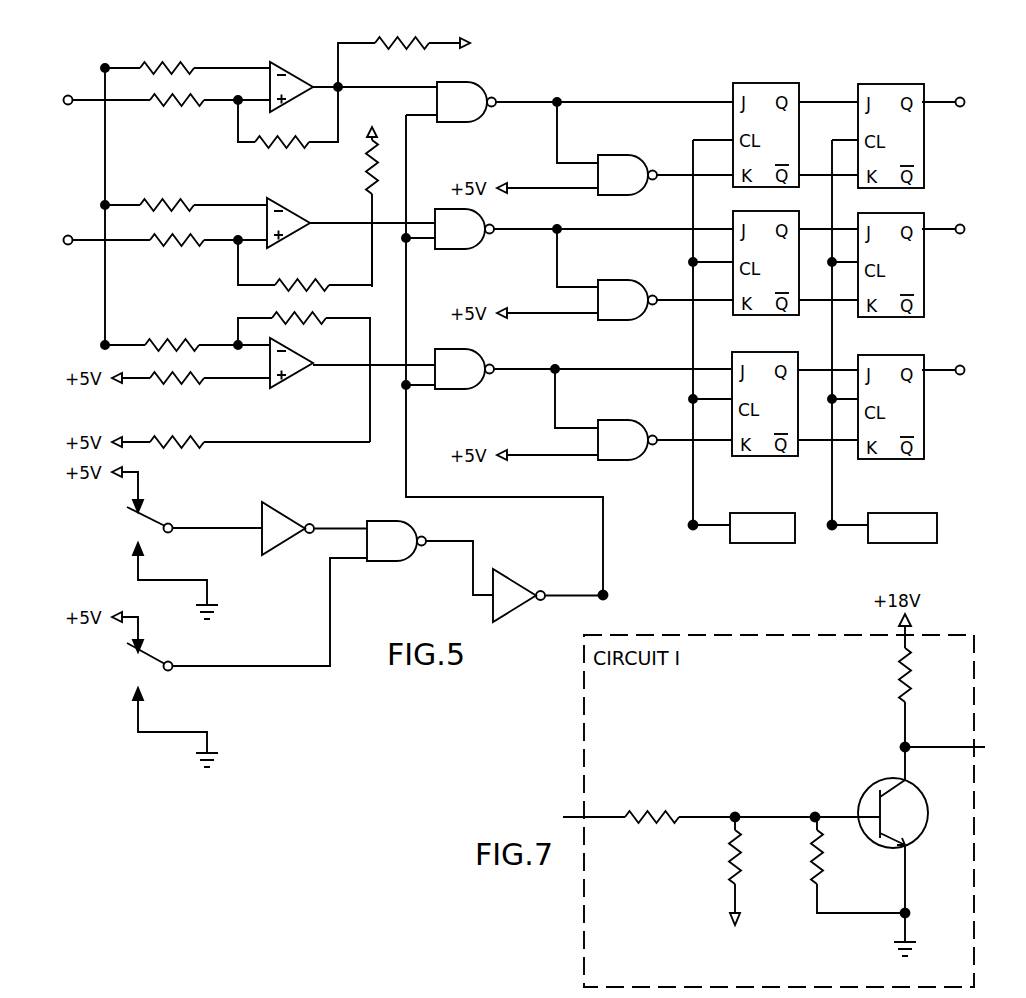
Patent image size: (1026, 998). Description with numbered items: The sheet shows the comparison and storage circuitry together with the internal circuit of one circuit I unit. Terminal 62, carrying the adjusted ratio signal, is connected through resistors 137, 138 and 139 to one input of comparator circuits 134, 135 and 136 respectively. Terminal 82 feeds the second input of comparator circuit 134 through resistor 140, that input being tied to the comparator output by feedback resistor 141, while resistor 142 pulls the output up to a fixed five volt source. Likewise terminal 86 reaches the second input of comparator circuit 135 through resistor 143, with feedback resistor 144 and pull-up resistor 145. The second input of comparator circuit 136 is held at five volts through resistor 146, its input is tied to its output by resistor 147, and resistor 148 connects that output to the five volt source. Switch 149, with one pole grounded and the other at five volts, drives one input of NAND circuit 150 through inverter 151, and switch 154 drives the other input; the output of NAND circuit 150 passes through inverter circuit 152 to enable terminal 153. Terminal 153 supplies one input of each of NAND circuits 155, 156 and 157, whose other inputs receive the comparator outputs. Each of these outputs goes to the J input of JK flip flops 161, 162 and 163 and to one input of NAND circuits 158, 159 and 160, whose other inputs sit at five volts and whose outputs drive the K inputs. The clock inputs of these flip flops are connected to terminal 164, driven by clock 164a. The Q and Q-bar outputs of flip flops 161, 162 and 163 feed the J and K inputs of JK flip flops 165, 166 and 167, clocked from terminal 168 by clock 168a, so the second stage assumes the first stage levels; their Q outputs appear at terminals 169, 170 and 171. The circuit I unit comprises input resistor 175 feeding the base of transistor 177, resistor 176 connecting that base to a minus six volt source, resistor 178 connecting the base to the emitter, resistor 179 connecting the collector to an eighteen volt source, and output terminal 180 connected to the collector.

In FIG. 5, the terminal 62 is at (108, 63).
In FIG. 5, the terminal 82 is at (66, 105).
In FIG. 5, the terminal 86 is at (66, 245).
In FIG. 5, the comparator circuit 134 is at (308, 65).
In FIG. 5, the comparator circuit 135 is at (288, 216).
In FIG. 5, the comparator circuit 136 is at (290, 378).
In FIG. 5, the resistor 137 is at (176, 62).
In FIG. 5, the resistor 138 is at (150, 200).
In FIG. 5, the resistor 139 is at (152, 340).
In FIG. 5, the resistor 140 is at (205, 104).
In FIG. 5, the resistor 141 is at (283, 143).
In FIG. 5, the resistor 142 is at (418, 50).
In FIG. 5, the resistor 143 is at (160, 244).
In FIG. 5, the resistor 144 is at (287, 283).
In FIG. 5, the resistor 145 is at (368, 178).
In FIG. 5, the resistor 146 is at (190, 382).
In FIG. 5, the resistor 147 is at (292, 322).
In FIG. 5, the resistor 148 is at (185, 448).
In FIG. 5, the switch 149 is at (172, 521).
In FIG. 5, the NAND circuit 150 is at (372, 563).
In FIG. 5, the inverter 151 is at (283, 518).
In FIG. 5, the inverter circuit 152 is at (503, 590).
In FIG. 5, the terminal 153 is at (607, 591).
In FIG. 5, the switch 154 is at (160, 658).
In FIG. 5, the NAND circuit 155 is at (470, 84).
In FIG. 5, the NAND circuit 156 is at (470, 246).
In FIG. 5, the NAND circuit 157 is at (468, 364).
In FIG. 5, the NAND circuit 158 is at (612, 163).
In FIG. 5, the NAND circuit 159 is at (610, 288).
In FIG. 5, the NAND circuit 160 is at (608, 427).
In FIG. 5, the JK flip flop 161 is at (753, 87).
In FIG. 5, the JK flip flop 162 is at (762, 316).
In FIG. 5, the JK flip flop 163 is at (768, 455).
In FIG. 5, the terminal 164 is at (688, 525).
In FIG. 5, the clock 164a is at (768, 542).
In FIG. 5, the JK flip flop 165 is at (888, 90).
In FIG. 5, the JK flip flop 166 is at (870, 317).
In FIG. 5, the JK flip flop 167 is at (872, 456).
In FIG. 5, the terminal 168 is at (828, 530).
In FIG. 5, the clock 168a is at (928, 542).
In FIG. 5, the terminal 169 is at (963, 106).
In FIG. 5, the terminal 170 is at (963, 233).
In FIG. 5, the terminal 171 is at (963, 374).
In FIG. 7, the input resistor 175 is at (628, 812).
In FIG. 7, the resistor 176 is at (726, 871).
In FIG. 7, the transistor 177 is at (868, 790).
In FIG. 7, the resistor 178 is at (823, 874).
In FIG. 7, the resistor 179 is at (920, 666).
In FIG. 7, the output terminal 180 is at (900, 747).